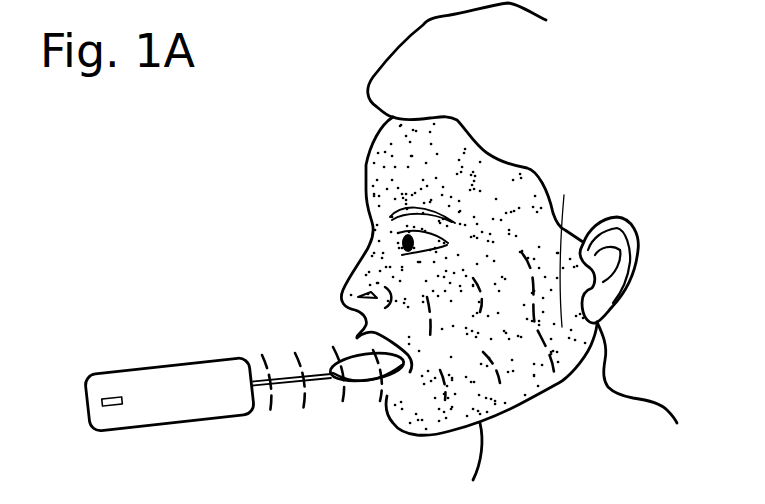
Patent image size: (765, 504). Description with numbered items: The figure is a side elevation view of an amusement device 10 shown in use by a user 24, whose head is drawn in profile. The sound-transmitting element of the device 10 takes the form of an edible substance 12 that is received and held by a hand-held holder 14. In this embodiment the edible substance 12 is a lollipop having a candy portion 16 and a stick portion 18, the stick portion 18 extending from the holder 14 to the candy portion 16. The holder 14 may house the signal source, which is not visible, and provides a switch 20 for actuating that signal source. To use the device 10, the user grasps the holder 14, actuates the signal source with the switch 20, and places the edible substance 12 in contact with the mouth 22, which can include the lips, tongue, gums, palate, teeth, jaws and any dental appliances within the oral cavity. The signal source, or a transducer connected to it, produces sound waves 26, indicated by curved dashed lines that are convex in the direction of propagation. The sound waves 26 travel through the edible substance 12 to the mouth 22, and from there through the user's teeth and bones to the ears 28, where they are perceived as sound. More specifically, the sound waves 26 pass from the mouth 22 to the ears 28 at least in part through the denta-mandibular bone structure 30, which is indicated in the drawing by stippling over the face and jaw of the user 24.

The device 10 is at (203, 290).
The edible substance 12 is at (278, 297).
The holder 14 is at (127, 300).
The candy portion 16 is at (348, 356).
The stick portion 18 is at (285, 390).
The switch 20 is at (110, 395).
The mouth 22 is at (378, 392).
The user 24 is at (347, 125).
The sound waves 26 is at (443, 323).
The ears 28 is at (643, 245).
The denta-mandibular bone structure 30 is at (503, 210).